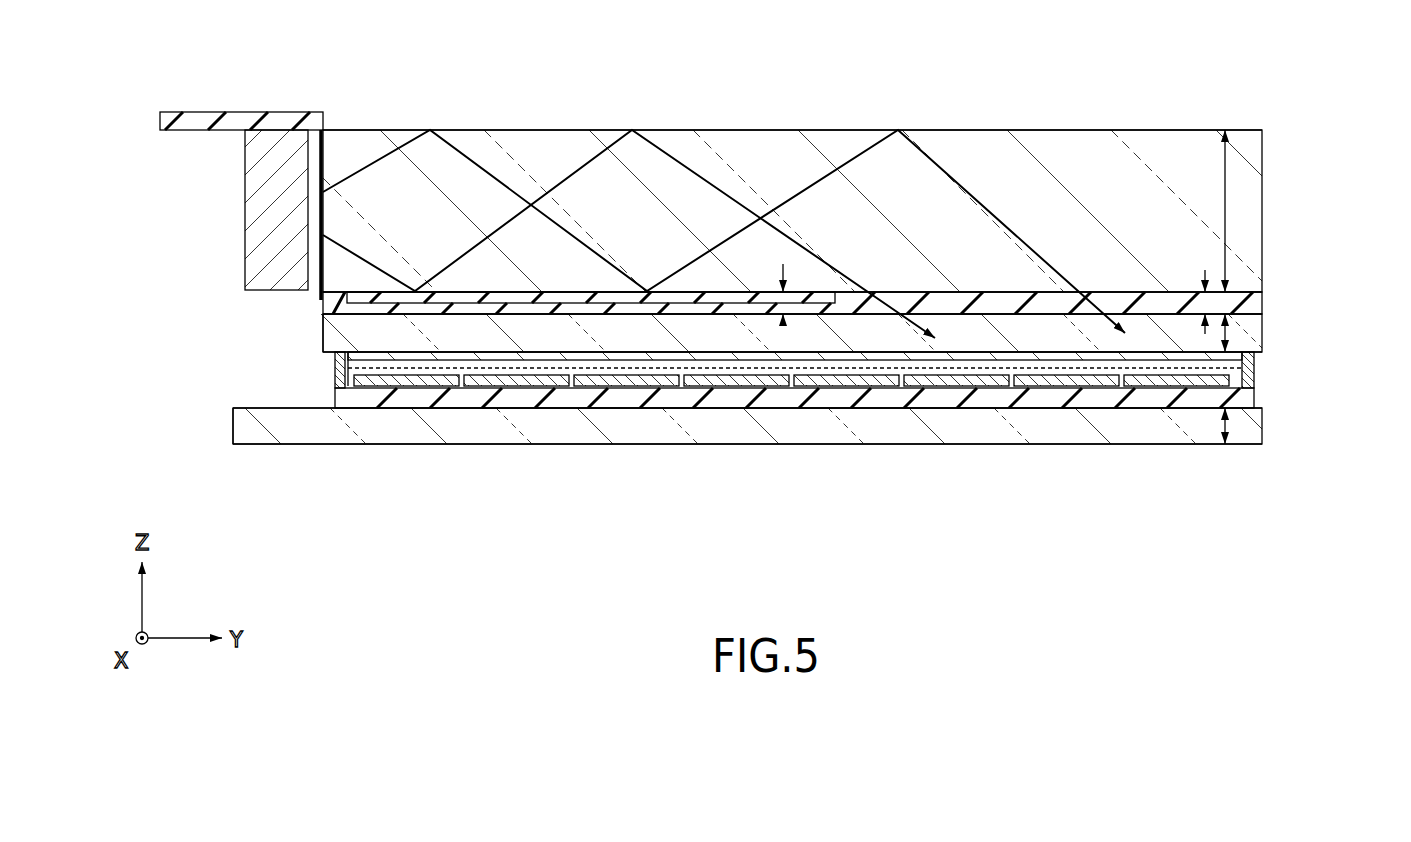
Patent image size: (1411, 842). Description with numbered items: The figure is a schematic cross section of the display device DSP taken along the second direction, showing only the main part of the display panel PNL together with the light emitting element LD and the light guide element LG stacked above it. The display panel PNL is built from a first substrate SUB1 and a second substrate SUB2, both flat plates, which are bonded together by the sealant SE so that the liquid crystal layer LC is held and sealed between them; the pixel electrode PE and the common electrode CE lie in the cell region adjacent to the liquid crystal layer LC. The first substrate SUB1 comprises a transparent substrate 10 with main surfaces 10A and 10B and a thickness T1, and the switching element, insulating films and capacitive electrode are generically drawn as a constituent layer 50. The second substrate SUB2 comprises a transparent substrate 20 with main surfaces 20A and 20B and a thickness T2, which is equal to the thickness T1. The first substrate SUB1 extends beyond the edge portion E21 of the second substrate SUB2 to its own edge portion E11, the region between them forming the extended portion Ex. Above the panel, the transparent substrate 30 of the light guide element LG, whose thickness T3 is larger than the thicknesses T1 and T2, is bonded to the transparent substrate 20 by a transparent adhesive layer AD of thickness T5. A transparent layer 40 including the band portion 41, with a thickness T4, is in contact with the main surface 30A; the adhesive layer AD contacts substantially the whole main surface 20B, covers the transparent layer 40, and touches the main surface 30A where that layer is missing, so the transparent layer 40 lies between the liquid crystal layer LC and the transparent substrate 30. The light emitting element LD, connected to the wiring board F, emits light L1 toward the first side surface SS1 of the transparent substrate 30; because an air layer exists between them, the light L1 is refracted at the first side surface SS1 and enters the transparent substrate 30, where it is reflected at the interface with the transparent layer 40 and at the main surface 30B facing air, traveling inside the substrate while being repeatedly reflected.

The display device DSP is at (765, 309).
The display panel PNL is at (765, 415).
The light guide element LG is at (834, 180).
The transparent substrate 30 is at (834, 180).
The main surface 30A is at (1006, 297).
The main surface 30B is at (948, 126).
The light L1 is at (561, 180).
The transparent adhesive layer AD is at (826, 191).
The band portion 41 is at (717, 295).
The transparent layer 40 is at (591, 186).
The second substrate SUB2 is at (809, 400).
The transparent substrate 20 is at (782, 400).
The main surface 20A is at (1096, 357).
The main surface 20B is at (1127, 306).
The edge portion E21 is at (320, 332).
The sealant SE is at (1252, 370).
The liquid crystal layer LC is at (990, 369).
The pixel electrode PE is at (791, 435).
The common electrode CE is at (918, 376).
The first substrate SUB1 is at (765, 435).
The constituent layer 50 is at (736, 398).
The transparent substrate 10 is at (734, 435).
The main surface 10A is at (592, 447).
The main surface 10B is at (632, 404).
The edge portion E11 is at (230, 425).
The extended portion Ex is at (263, 403).
The wiring board F is at (241, 178).
The first side surface SS1 is at (321, 171).
The light emitting element LD is at (247, 209).
The thickness T1 is at (1233, 425).
The thickness T2 is at (1224, 334).
The thickness T3 is at (1229, 221).
The thickness T4 is at (787, 320).
The thickness T5 is at (1209, 302).